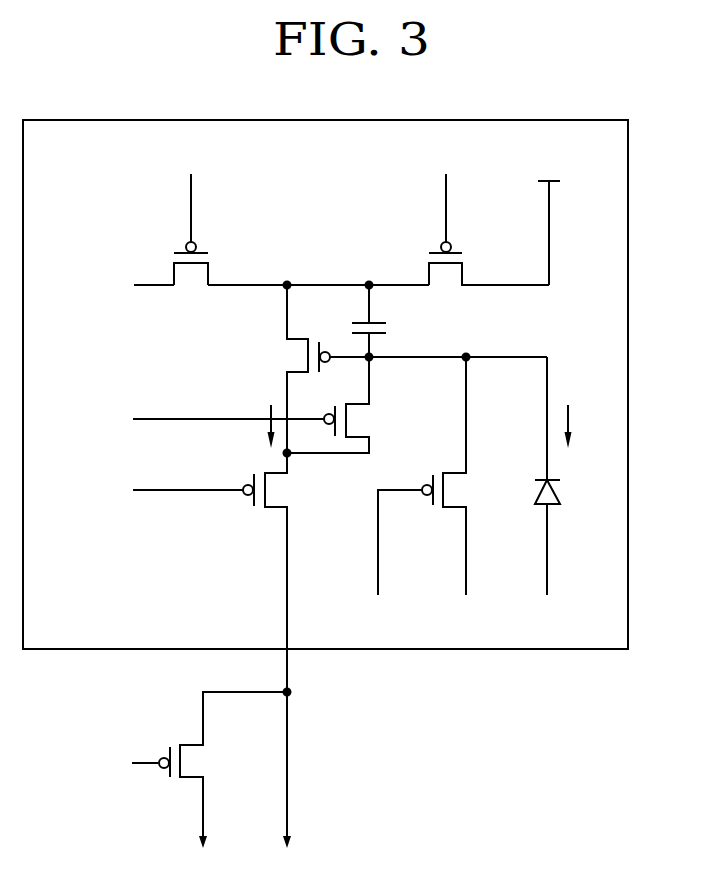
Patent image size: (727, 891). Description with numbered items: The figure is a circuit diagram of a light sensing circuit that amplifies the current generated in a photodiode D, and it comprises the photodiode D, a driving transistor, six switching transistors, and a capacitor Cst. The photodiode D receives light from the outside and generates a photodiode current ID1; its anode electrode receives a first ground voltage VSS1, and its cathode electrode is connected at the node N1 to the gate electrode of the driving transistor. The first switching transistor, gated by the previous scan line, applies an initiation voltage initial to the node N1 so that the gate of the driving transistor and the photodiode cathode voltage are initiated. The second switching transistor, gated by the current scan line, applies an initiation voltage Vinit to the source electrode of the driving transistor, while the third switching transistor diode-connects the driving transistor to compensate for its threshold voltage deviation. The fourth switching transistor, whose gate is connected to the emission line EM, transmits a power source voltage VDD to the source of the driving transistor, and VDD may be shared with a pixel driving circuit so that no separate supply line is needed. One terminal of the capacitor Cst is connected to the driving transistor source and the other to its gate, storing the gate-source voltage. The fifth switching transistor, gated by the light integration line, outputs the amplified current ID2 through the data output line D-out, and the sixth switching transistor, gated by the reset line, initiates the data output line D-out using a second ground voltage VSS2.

The capacitor Cst is at (388, 321).
The photodiode D is at (560, 476).
The node N1 is at (482, 347).
The photodiode current ID1 is at (583, 426).
The amplified current ID2 is at (256, 427).
The initiation voltage Vinit is at (131, 285).
The emission line EM is at (446, 194).
The power source voltage VDD is at (553, 215).
The first ground voltage VSS1 is at (542, 623).
The second ground voltage VSS2 is at (201, 862).
The initiation voltage initial is at (463, 620).
The data output line D-out is at (282, 789).